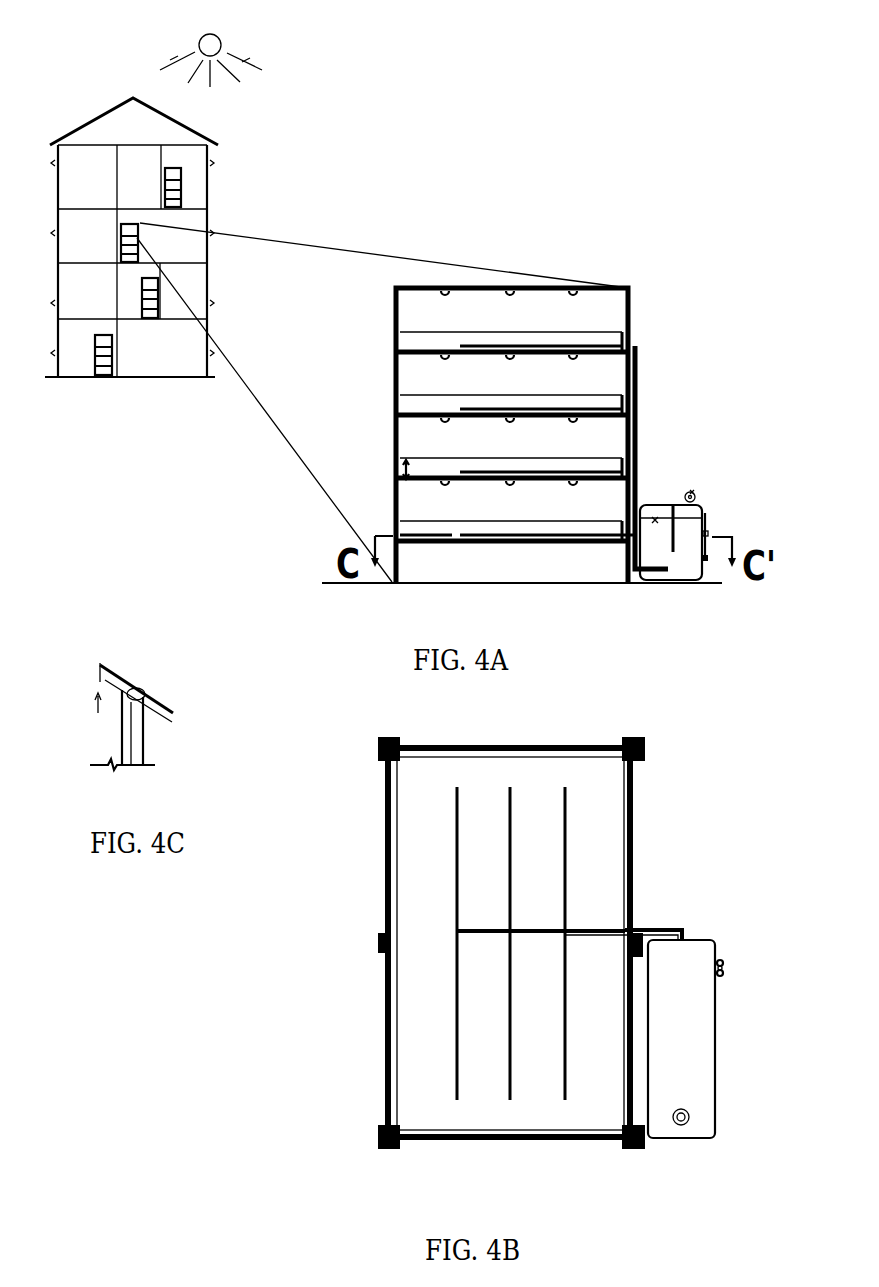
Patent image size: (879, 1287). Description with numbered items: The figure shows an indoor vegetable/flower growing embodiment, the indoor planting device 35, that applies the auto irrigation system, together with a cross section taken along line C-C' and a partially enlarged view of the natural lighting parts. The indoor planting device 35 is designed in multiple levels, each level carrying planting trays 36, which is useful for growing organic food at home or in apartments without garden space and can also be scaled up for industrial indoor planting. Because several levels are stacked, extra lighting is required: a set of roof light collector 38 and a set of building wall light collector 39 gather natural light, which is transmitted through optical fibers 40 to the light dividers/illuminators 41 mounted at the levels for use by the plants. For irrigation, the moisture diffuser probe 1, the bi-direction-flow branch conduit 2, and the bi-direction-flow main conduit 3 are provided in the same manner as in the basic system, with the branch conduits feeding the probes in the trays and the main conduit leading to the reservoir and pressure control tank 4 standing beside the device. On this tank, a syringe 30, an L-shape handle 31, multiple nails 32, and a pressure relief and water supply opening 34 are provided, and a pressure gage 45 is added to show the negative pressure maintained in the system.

In FIG. 4B, the moisture diffuser probe 1 is at (458, 888).
In FIG. 4A, the bi-direction-flow branch conduit 2 is at (507, 343).
In FIG. 4B, the bi-direction-flow branch conduit 2 is at (557, 933).
In FIG. 4A, the bi-direction-flow main conduit 3 is at (637, 408).
In FIG. 4B, the bi-direction-flow main conduit 3 is at (660, 928).
In FIG. 4A, the reservoir and pressure control tank 4 is at (677, 560).
In FIG. 4B, the reservoir and pressure control tank 4 is at (702, 1060).
In FIG. 4A, the syringe 30 is at (707, 533).
In FIG. 4B, the syringe 30 is at (723, 974).
In FIG. 4B, the L-shape handle 31 is at (722, 964).
In FIG. 4A, the nails 32 is at (705, 535).
In FIG. 4B, the nails 32 is at (723, 967).
In FIG. 4A, the pressure relief and water supply opening 34 is at (685, 495).
In FIG. 4B, the pressure relief and water supply opening 34 is at (688, 1123).
In FIG. 4A, the indoor planting device 35 is at (183, 200).
In FIG. 4B, the indoor planting device 35 is at (393, 980).
In FIG. 4A, the planting trays 36 is at (398, 470).
In FIG. 4B, the planting trays 36 is at (412, 852).
In FIG. 4A, the roof light collector 38 is at (200, 133).
In FIG. 4C, the roof light collector 38 is at (140, 688).
In FIG. 4A, the building wall light collector 39 is at (207, 213).
In FIG. 4C, the building wall light collector 39 is at (140, 735).
In FIG. 4C, the optical fiber 40 is at (130, 755).
In FIG. 4A, the light dividers/illuminators 41 is at (512, 287).
In FIG. 4A, the pressure gage 45 is at (692, 492).